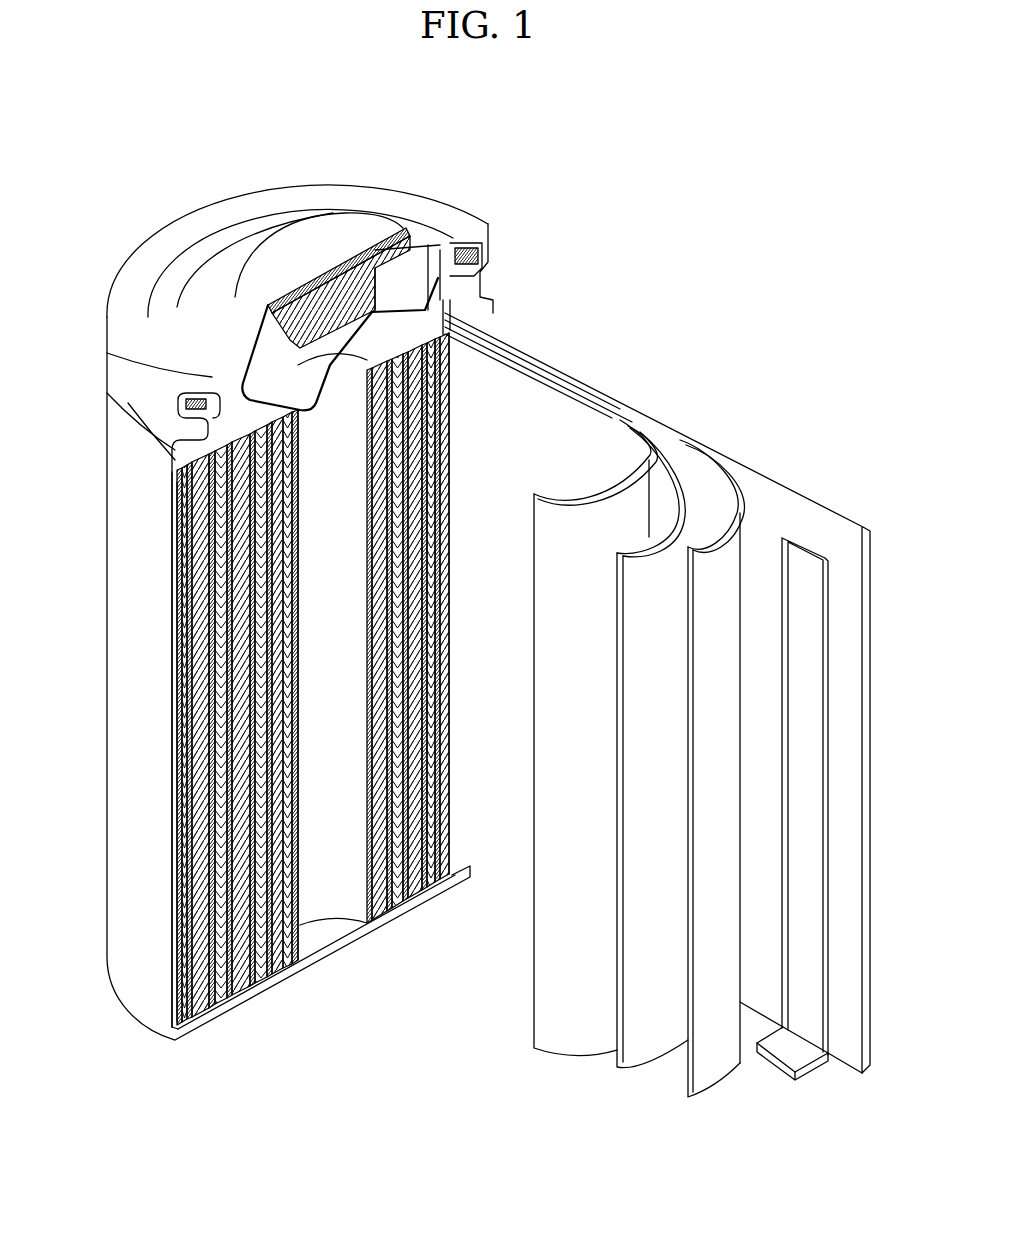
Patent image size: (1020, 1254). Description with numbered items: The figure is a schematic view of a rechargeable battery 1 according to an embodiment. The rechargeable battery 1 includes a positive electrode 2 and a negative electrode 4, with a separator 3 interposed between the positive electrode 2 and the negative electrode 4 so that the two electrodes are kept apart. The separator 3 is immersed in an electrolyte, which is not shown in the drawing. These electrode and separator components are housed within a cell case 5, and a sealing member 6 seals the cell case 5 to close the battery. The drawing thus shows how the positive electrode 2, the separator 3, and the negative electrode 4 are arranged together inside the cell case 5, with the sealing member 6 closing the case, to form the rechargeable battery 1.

The rechargeable battery 1 is at (708, 225).
The positive electrode 2 is at (820, 502).
The separator 3 is at (634, 438).
The negative electrode 4 is at (663, 467).
The cell case 5 is at (108, 764).
The sealing member 6 is at (295, 237).